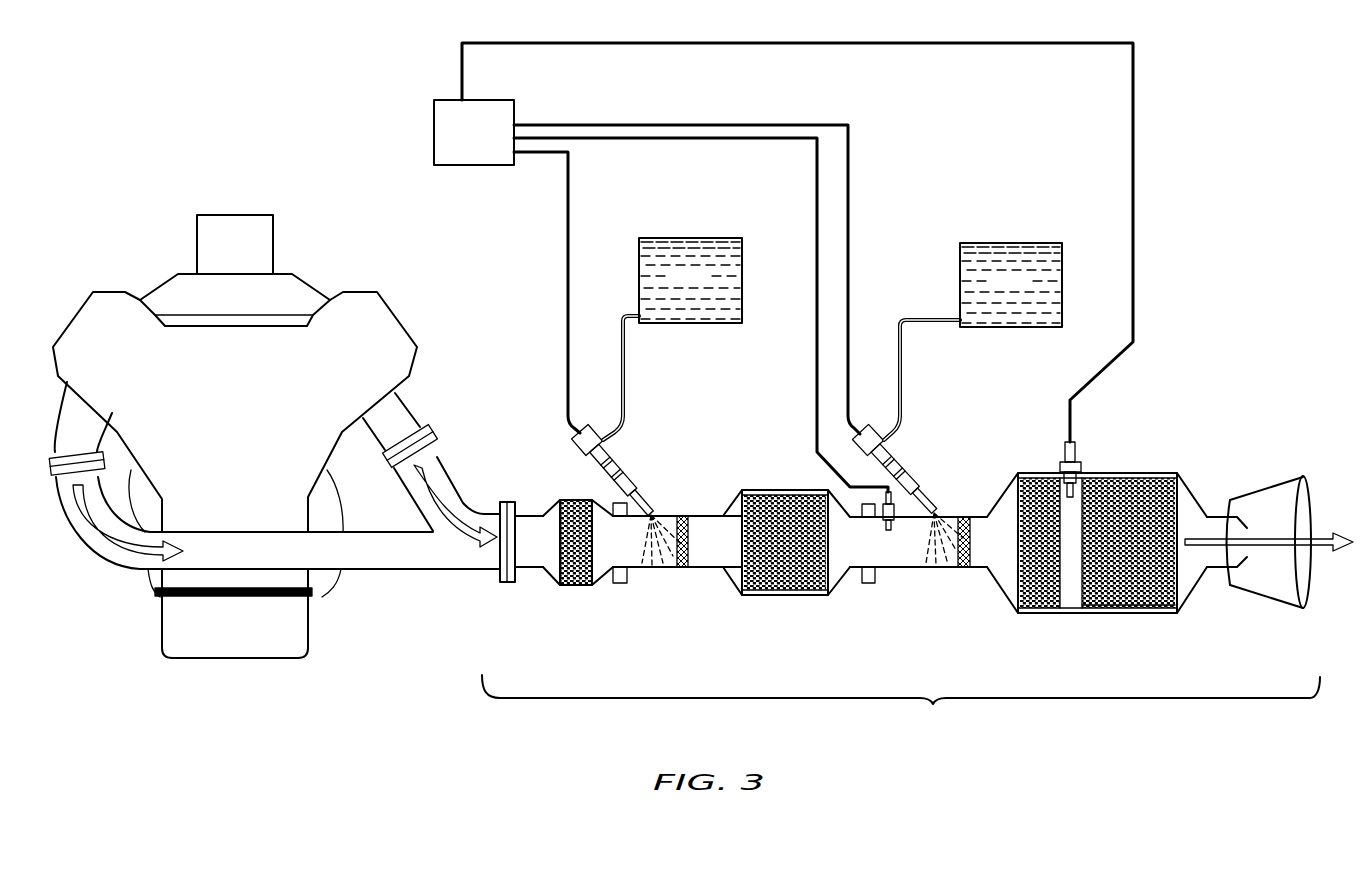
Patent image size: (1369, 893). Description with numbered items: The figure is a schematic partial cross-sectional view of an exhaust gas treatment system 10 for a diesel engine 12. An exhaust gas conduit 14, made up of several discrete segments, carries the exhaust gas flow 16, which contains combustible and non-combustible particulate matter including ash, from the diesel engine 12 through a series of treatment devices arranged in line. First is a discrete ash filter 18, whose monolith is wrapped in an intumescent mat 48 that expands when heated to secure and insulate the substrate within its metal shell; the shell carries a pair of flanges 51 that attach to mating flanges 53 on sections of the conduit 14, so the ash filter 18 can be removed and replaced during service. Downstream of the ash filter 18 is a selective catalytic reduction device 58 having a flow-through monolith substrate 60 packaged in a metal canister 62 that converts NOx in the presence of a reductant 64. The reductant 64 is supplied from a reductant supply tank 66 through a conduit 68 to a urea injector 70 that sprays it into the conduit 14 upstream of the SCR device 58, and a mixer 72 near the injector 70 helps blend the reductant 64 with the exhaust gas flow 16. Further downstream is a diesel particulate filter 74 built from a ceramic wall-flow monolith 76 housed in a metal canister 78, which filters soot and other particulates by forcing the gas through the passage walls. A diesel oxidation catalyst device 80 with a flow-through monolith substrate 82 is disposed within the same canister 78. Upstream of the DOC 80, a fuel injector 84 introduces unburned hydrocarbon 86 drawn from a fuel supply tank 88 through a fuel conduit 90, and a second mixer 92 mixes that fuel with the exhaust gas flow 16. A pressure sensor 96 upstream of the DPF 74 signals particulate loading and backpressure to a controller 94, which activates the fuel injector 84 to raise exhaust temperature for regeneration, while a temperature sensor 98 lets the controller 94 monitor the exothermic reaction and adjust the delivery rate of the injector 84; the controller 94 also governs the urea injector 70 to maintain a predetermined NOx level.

The exhaust gas treatment system 10 is at (933, 704).
The diesel engine 12 is at (144, 270).
The exhaust gas conduit 14 is at (1218, 513).
The exhaust gas flow 16 is at (112, 552).
The ash filter 18 is at (560, 594).
The intumescent mat 48 is at (577, 587).
The flange 51 is at (622, 502).
The flange 53 is at (488, 578).
The selective catalytic reduction device 58 is at (745, 604).
The monolith substrate 60 is at (800, 595).
The canister 62 is at (791, 513).
The reductant 64 is at (690, 280).
The reductant supply tank 66 is at (702, 232).
The conduit 68 is at (625, 397).
The urea injector 70 is at (625, 485).
The mixer 72 is at (683, 516).
The diesel particulate filter 74 is at (1091, 622).
The ceramic wall-flow monolith 76 is at (1137, 488).
The canister 78 is at (1110, 613).
The diesel oxidation catalyst device 80 is at (1015, 565).
The monolith substrate 82 is at (1030, 593).
The fuel injector 84 is at (908, 475).
The hydrocarbon 86 is at (1011, 285).
The fuel supply tank 88 is at (1012, 236).
The fuel conduit 90 is at (905, 377).
The mixer 92 is at (962, 567).
The controller 94 is at (783, 267).
The pressure sensor 96 is at (888, 533).
The temperature sensor 98 is at (1077, 453).